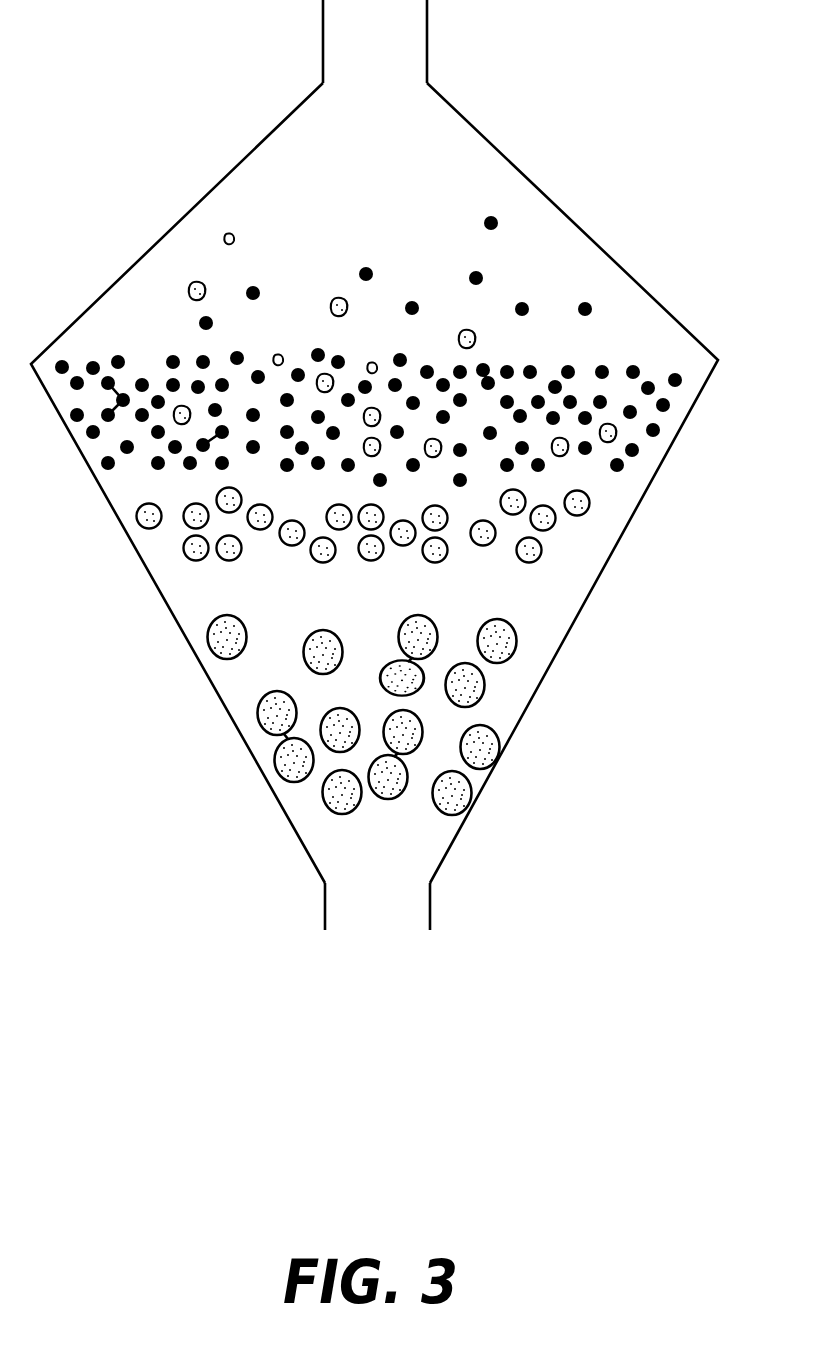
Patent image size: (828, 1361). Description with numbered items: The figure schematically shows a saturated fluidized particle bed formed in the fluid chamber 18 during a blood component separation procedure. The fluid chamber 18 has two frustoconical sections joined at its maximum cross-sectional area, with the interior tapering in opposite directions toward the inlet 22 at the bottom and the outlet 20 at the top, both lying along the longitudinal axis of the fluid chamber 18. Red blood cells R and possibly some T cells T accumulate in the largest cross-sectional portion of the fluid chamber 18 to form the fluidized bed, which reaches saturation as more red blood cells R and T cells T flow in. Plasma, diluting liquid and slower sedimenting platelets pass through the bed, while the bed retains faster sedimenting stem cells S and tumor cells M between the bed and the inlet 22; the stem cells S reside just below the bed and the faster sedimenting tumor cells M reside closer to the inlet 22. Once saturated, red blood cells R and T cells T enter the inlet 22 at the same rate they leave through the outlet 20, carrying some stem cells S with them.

The fluid chamber 18 is at (563, 212).
The outlet 20 is at (427, 37).
The inlet 22 is at (430, 905).
The red blood cells R is at (649, 387).
The T cells T is at (568, 453).
The stem cells S is at (556, 524).
The tumor cells M is at (485, 690).